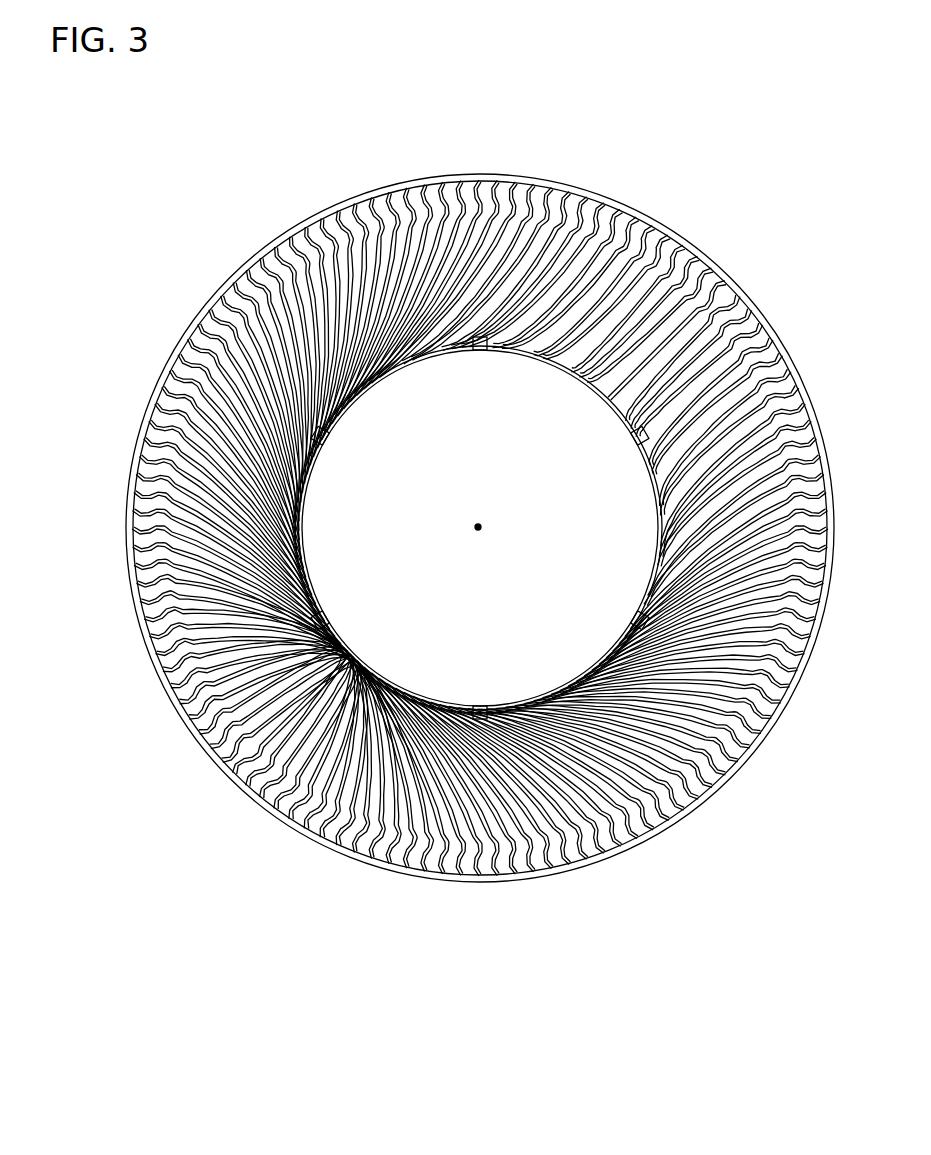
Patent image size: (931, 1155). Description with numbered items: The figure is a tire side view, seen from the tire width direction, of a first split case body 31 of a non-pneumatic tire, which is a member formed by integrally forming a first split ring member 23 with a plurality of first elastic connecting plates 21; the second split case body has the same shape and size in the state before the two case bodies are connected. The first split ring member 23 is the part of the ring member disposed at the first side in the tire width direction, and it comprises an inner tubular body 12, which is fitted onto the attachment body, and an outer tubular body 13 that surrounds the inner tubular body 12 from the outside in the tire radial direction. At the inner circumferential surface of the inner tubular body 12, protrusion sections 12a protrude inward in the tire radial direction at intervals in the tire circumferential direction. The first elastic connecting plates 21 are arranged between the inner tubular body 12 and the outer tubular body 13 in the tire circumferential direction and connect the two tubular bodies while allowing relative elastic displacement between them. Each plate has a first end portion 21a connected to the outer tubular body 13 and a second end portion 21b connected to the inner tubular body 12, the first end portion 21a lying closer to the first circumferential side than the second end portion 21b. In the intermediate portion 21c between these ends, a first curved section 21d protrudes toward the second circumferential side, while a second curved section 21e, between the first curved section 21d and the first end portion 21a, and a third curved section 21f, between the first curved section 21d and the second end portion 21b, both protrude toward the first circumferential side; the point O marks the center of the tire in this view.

The first split case body 31 is at (735, 58).
The first split ring member 23 is at (735, 105).
The outer tubular body 13 is at (637, 212).
The inner tubular body 12 is at (573, 364).
The protrusion section 12a is at (340, 607).
The first elastic connecting plate 21 is at (530, 245).
The first end portion 21a is at (437, 180).
The second end portion 21b is at (540, 350).
The intermediate portion 21c is at (320, 280).
The first curved section 21d is at (335, 765).
The second curved section 21e is at (362, 840).
The third curved section 21f is at (300, 688).
The axis (center) of the tire O is at (484, 522).